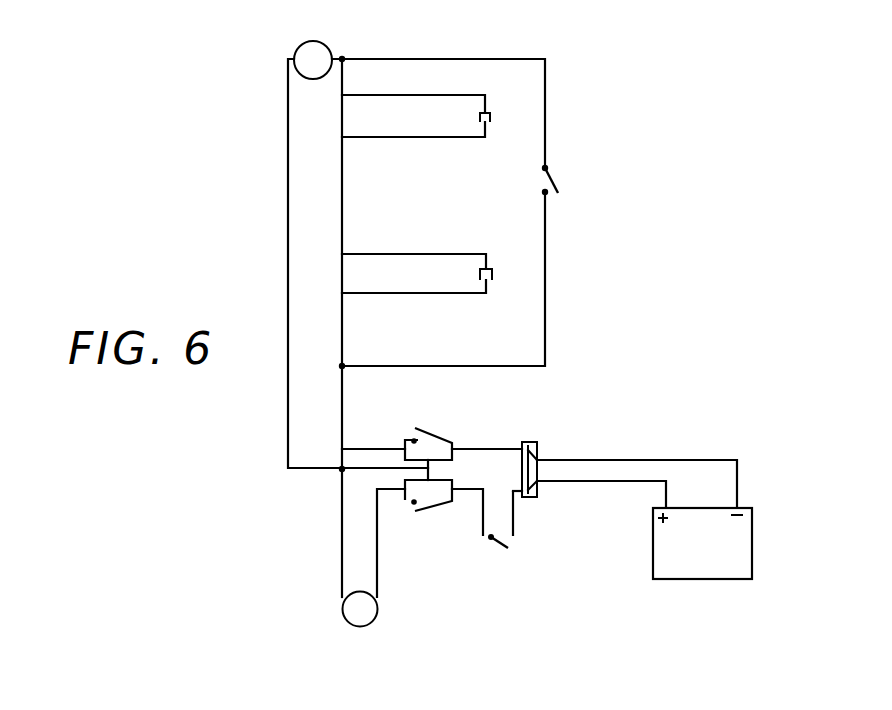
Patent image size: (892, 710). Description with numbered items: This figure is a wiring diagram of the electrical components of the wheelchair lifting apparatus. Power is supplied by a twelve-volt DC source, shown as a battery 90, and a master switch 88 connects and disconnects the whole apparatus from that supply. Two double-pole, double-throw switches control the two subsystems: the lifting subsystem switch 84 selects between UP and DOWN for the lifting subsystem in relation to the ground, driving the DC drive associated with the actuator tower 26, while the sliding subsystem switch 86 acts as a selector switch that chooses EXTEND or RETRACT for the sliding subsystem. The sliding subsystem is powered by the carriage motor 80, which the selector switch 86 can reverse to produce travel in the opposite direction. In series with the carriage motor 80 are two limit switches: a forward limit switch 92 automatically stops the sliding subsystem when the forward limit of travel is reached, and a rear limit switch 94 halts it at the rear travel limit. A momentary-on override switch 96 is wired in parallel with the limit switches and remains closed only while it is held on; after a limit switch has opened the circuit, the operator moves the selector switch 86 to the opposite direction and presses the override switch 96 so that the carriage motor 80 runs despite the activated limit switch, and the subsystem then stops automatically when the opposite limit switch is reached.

The carriage motor 80 is at (275, 67).
The actuator tower 26 is at (333, 599).
The forward limit switch 92 is at (502, 127).
The rear limit switch 94 is at (500, 287).
The override switch 96 is at (564, 171).
The sliding subsystem switch 86 is at (432, 420).
The lifting subsystem switch 84 is at (422, 522).
The master switch 88 is at (511, 550).
The battery 90 is at (688, 580).